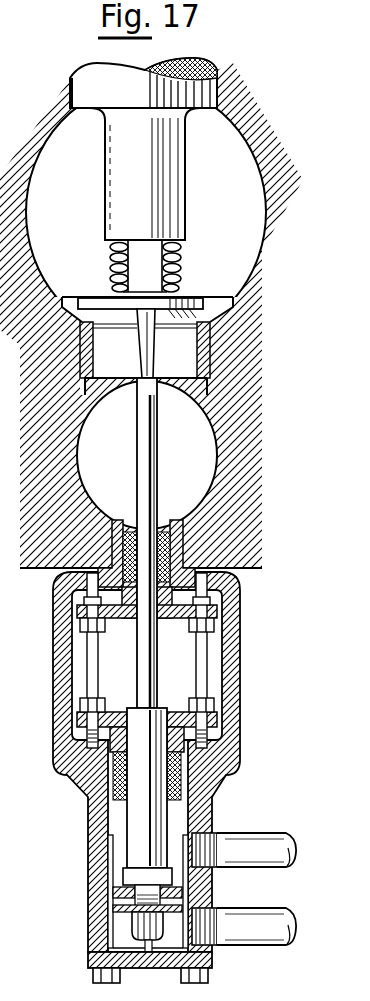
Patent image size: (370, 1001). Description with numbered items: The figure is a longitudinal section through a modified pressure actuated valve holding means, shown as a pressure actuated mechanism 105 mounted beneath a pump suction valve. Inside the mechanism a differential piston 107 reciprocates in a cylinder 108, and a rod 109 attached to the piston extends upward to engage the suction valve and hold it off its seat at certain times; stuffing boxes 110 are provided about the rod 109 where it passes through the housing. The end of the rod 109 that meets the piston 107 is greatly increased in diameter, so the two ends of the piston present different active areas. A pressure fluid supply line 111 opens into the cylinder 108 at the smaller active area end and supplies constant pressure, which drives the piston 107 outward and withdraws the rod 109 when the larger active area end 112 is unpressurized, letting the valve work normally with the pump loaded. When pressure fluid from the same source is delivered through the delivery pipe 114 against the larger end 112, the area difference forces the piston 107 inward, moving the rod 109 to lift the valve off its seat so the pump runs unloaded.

The pressure actuated mechanism 105 is at (246, 674).
The differential piston structure 107 is at (190, 897).
The cylinder 108 is at (108, 858).
The rod 109 is at (148, 672).
The stuffing boxes 110 is at (167, 522).
The pressure fluid supply line 111 is at (282, 835).
The larger active area end of the piston 112 is at (118, 923).
The delivery pipe 114 is at (286, 911).